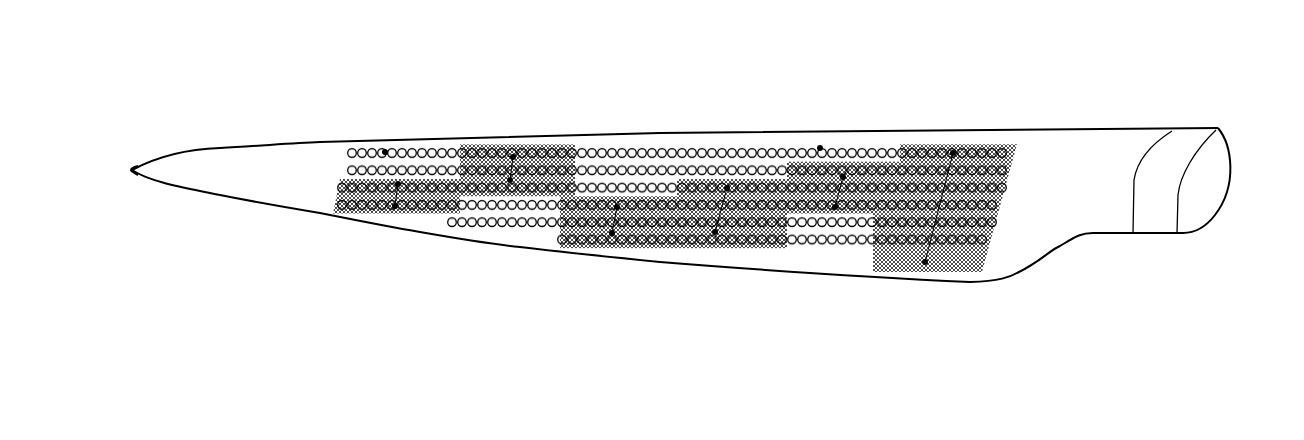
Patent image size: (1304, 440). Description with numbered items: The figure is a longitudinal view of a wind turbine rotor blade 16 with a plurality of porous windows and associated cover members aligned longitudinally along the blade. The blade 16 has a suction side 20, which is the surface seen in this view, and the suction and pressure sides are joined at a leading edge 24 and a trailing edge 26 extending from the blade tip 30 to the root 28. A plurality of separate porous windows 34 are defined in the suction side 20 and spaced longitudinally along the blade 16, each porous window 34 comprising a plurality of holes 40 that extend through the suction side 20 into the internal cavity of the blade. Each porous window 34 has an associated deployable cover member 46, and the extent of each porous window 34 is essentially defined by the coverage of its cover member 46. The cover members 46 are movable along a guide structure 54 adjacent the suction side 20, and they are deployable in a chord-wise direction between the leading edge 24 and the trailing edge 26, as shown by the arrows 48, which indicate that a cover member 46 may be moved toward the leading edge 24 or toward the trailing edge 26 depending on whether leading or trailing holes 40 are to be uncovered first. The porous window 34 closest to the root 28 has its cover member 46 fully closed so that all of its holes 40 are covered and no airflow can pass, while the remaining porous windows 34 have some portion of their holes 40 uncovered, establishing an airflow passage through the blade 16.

The rotor blade 16 is at (1092, 86).
The suction side 20 is at (1110, 213).
The leading edge 24 is at (606, 134).
The trailing edge 26 is at (864, 278).
The root 28 is at (1188, 140).
The blade tip 30 is at (128, 167).
The porous window 34 is at (388, 148).
The holes 40 is at (536, 226).
The cover member 46 is at (567, 160).
The arrows 48 is at (978, 256).
The guide structure 54 is at (722, 153).